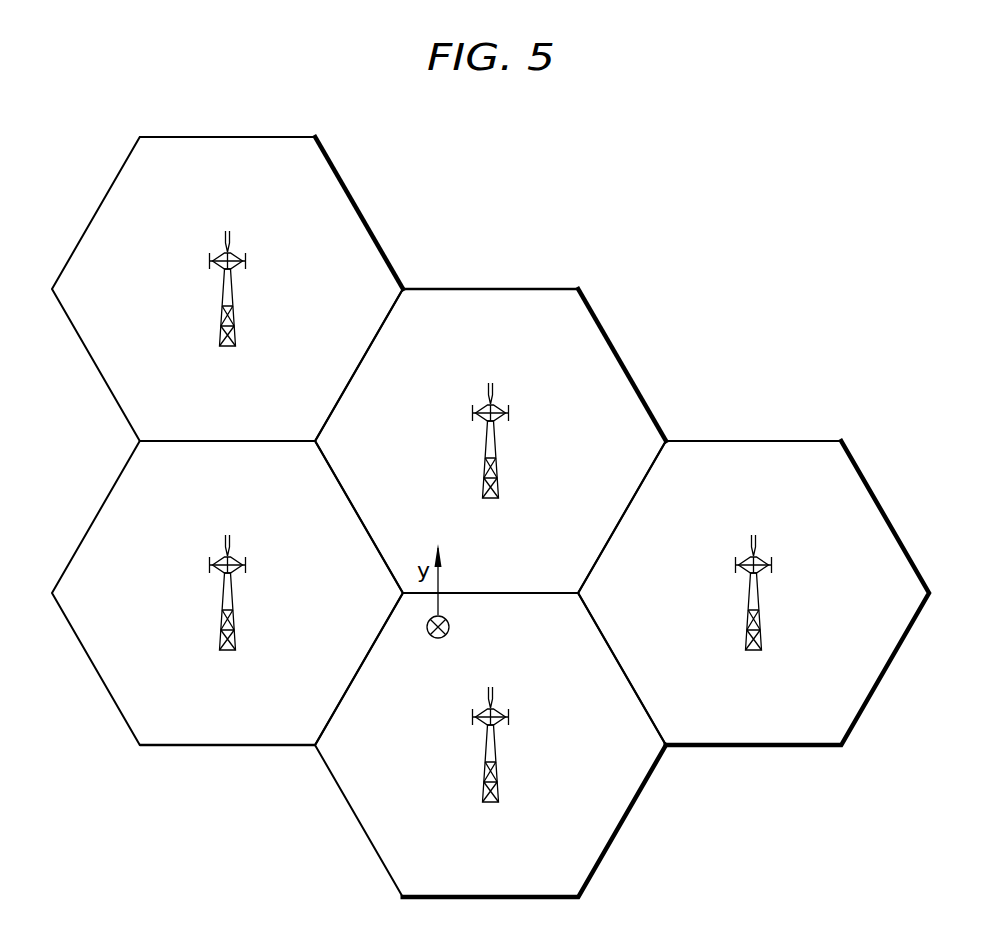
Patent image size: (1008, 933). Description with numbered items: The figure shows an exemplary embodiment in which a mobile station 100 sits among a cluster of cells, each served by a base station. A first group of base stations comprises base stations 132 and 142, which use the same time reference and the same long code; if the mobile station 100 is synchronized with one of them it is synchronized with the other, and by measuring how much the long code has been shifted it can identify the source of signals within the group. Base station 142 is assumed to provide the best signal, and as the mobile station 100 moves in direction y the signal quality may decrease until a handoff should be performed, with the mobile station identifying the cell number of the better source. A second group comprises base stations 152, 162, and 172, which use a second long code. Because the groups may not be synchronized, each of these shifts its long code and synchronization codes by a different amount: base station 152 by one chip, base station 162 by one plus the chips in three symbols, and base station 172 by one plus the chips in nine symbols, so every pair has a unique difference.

The base station 172 is at (233, 297).
The base station 162 is at (497, 445).
The base station 152 is at (233, 602).
The base station 132 is at (758, 602).
The base station 142 is at (498, 752).
The mobile station 100 is at (438, 639).